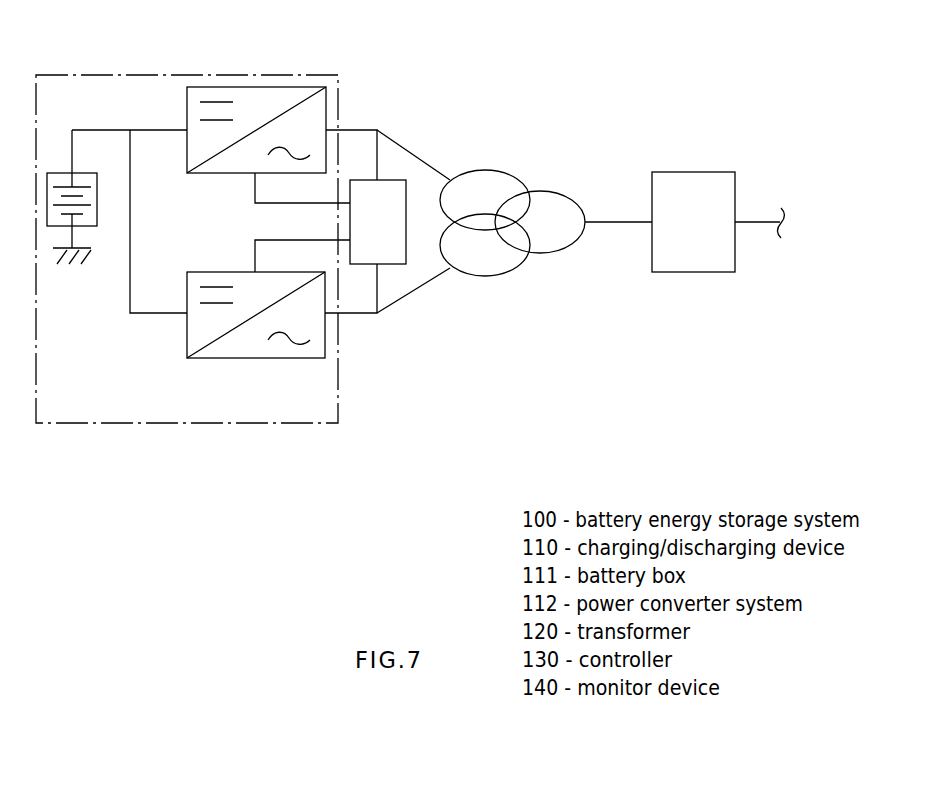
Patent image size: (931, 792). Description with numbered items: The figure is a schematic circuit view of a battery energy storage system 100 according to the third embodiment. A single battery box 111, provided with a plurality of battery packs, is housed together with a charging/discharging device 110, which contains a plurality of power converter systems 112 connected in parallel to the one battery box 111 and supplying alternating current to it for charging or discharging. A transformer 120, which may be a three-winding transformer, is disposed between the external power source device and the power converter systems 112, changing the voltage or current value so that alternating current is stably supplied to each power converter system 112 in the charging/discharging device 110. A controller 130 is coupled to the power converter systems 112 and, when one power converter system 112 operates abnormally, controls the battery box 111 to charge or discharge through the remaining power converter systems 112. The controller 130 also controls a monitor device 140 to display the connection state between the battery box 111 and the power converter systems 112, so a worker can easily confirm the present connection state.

The battery energy storage system 100 is at (533, 76).
The charging/discharging device 110 is at (339, 411).
The battery box 111 is at (97, 207).
The power converter system 112 is at (242, 87).
The transformer 120 is at (540, 253).
The controller 130 is at (395, 264).
The monitor device 140 is at (710, 172).